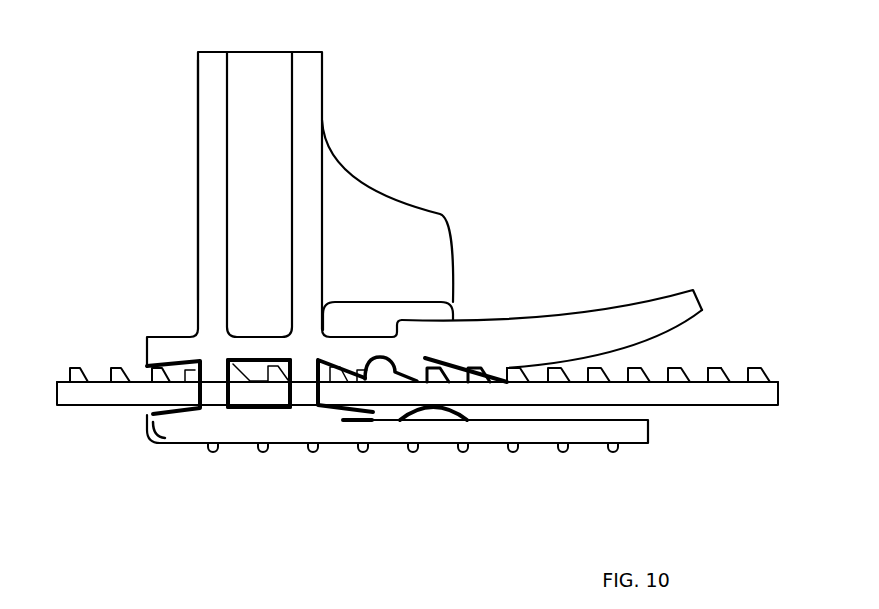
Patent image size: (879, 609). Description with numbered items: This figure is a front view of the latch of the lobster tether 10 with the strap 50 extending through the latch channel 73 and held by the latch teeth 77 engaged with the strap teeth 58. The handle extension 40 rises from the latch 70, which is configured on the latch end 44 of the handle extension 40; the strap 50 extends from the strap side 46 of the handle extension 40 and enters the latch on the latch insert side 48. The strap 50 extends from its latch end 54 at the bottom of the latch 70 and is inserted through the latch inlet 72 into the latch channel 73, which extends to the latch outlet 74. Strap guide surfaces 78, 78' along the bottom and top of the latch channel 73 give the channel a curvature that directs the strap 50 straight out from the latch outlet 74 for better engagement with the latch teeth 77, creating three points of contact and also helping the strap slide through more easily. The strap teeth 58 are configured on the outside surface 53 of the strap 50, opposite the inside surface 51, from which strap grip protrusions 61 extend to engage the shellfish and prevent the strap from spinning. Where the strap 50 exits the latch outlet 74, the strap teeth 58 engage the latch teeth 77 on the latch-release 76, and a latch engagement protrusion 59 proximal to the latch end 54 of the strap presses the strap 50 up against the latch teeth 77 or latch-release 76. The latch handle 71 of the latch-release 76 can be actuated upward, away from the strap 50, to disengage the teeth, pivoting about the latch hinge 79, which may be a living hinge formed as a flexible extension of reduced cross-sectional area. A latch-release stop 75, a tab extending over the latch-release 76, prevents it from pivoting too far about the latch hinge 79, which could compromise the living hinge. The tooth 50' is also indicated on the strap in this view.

The lobster tether 10 is at (96, 48).
The handle extension 40 is at (220, 97).
The latch end 44 is at (203, 327).
The strap side 46 is at (322, 87).
The latch insert side 48 is at (193, 143).
The strap 50 is at (417, 457).
The tooth 50' is at (734, 345).
The inside surface 51 is at (580, 445).
The outside surface 53 is at (763, 367).
The latch end 54 is at (483, 427).
The strap teeth 58 is at (435, 355).
The latch engagement protrusion 59 is at (422, 420).
The strap grip protrusions 61 is at (513, 452).
The latch 70 is at (217, 420).
The latch handle 71 is at (662, 325).
The latch inlet 72 is at (140, 400).
The latch channel 73 is at (240, 405).
The latch outlet 74 is at (355, 418).
The latch-release stop 75 is at (400, 283).
The latch-release 76 is at (612, 322).
The latch teeth 77 is at (455, 360).
The strap guide surface 78 is at (259, 461).
The strap guide surface 78' is at (259, 306).
The latch hinge 79 is at (373, 355).